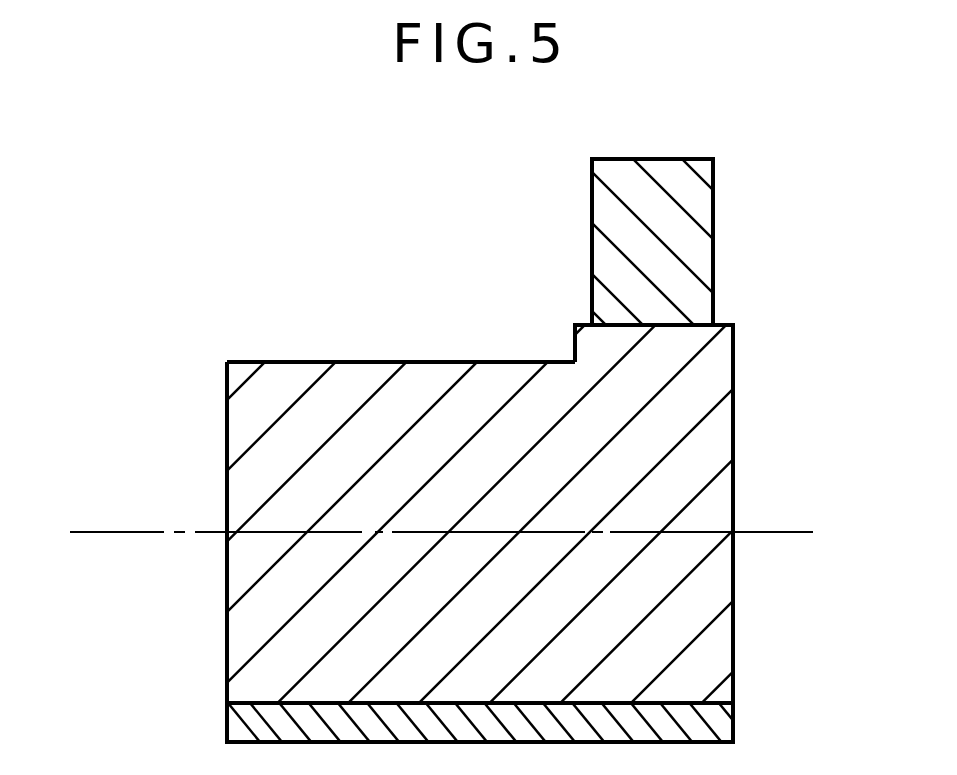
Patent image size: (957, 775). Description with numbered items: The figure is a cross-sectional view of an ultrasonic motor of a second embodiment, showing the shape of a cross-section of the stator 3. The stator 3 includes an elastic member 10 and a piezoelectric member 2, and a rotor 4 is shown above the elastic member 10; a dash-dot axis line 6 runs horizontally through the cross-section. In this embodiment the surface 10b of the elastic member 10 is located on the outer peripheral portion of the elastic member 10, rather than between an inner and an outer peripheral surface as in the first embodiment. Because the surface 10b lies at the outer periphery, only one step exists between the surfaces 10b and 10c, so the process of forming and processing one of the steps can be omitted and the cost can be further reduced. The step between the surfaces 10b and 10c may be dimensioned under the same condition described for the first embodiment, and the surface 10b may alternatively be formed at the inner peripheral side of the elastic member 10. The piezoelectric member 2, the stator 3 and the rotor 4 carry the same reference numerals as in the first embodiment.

The piezoelectric member 2 is at (718, 727).
The stator 3 is at (478, 430).
The rotor 4 is at (698, 252).
The center axis line 6 is at (113, 531).
The elastic member 10 is at (710, 587).
The surface 10b is at (733, 325).
The surface 10c is at (362, 362).